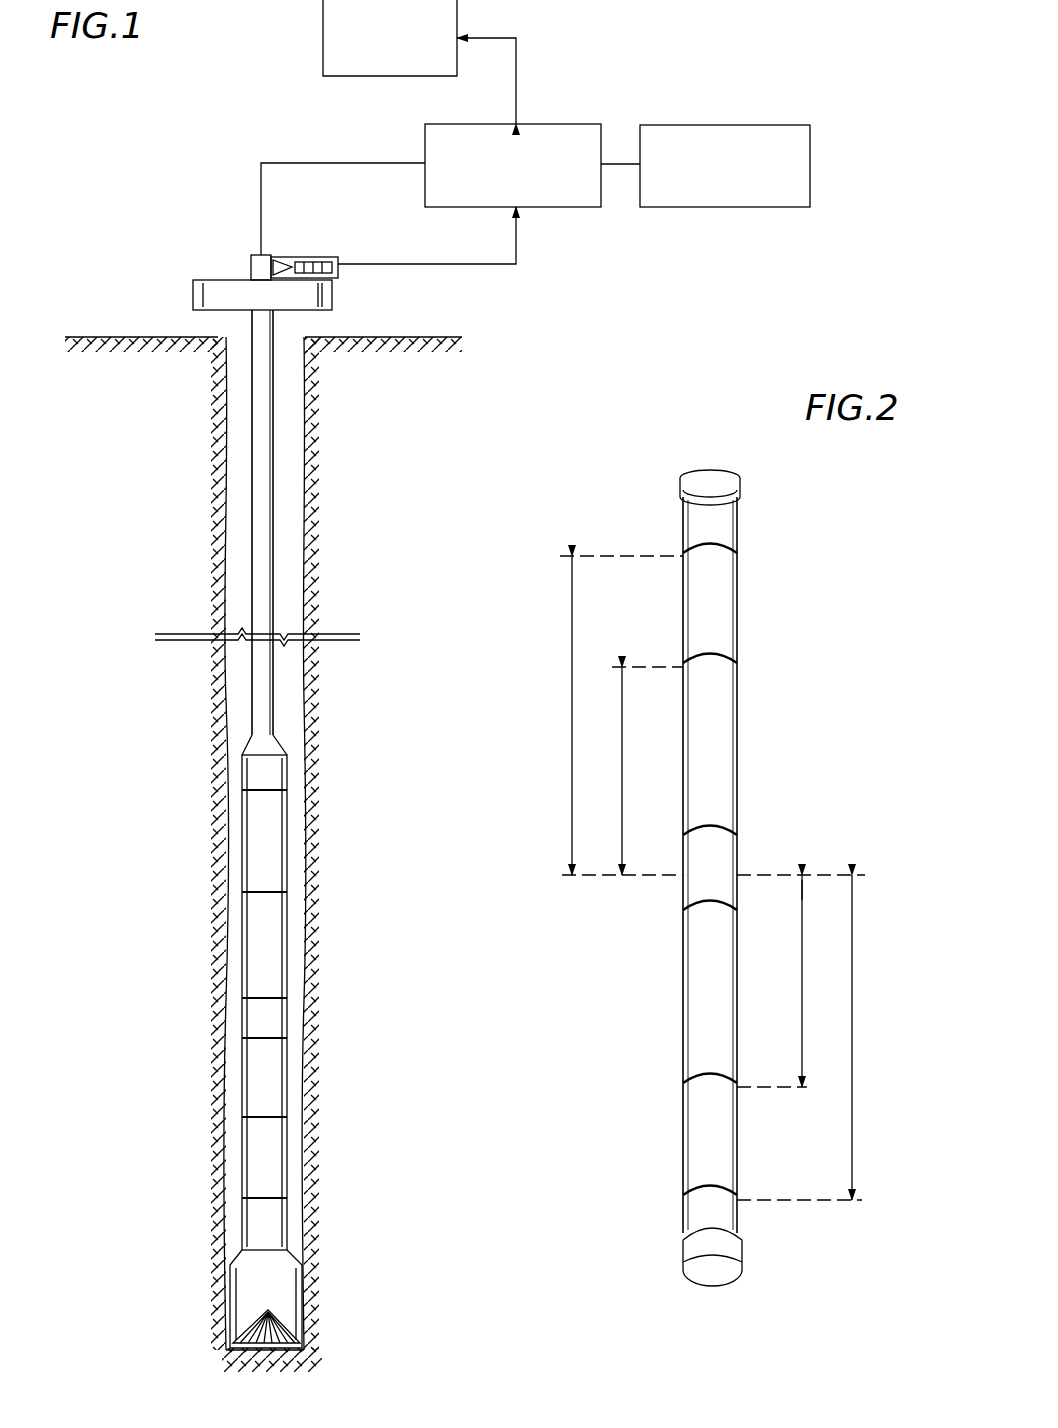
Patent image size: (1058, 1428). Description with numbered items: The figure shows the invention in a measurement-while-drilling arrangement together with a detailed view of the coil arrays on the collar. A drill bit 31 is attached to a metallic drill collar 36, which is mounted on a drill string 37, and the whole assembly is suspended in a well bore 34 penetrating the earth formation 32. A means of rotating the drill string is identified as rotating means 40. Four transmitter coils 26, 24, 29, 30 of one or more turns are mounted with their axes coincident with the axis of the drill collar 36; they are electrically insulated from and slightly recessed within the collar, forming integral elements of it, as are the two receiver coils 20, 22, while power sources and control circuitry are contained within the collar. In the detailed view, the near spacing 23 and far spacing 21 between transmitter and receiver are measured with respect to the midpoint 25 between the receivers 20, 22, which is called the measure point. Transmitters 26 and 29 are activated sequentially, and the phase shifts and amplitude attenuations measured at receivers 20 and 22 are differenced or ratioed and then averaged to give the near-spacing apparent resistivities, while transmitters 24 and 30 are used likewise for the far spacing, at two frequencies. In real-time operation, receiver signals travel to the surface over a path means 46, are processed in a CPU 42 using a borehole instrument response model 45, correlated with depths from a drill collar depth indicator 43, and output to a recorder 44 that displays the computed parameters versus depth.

In FIG. 1, the receiver coil 20 is at (242, 1038).
In FIG. 2, the receiver coil 20 is at (685, 910).
In FIG. 2, the far spacing 21 is at (570, 634).
In FIG. 1, the receiver coil 22 is at (242, 998).
In FIG. 2, the receiver coil 22 is at (737, 835).
In FIG. 2, the near spacing 23 is at (624, 725).
In FIG. 1, the transmitter coil 24 is at (242, 1198).
In FIG. 2, the transmitter coil 24 is at (685, 1195).
In FIG. 2, the midpoint (measure point) 25 is at (781, 899).
In FIG. 1, the transmitter coil 26 is at (287, 1117).
In FIG. 2, the transmitter coil 26 is at (685, 1082).
In FIG. 1, the transmitter coil 29 is at (287, 892).
In FIG. 2, the transmitter coil 29 is at (737, 668).
In FIG. 1, the transmitter coil 30 is at (287, 790).
In FIG. 2, the transmitter coil 30 is at (737, 553).
In FIG. 1, the drill bit 31 is at (285, 1332).
In FIG. 1, the earth formation 32 is at (208, 478).
In FIG. 1, the well bore 34 is at (237, 848).
In FIG. 1, the drill collar 36 is at (278, 1087).
In FIG. 2, the drill collar 36 is at (725, 745).
In FIG. 1, the drill string 37 is at (274, 428).
In FIG. 1, the means of rotating the drill string 40 is at (205, 280).
In FIG. 1, the CPU 42 is at (560, 124).
In FIG. 1, the drill collar depth indicator 43 is at (306, 257).
In FIG. 1, the recorder 44 is at (708, 125).
In FIG. 1, the borehole instrument response model 45 is at (322, 27).
In FIG. 1, the path means 46 is at (313, 163).